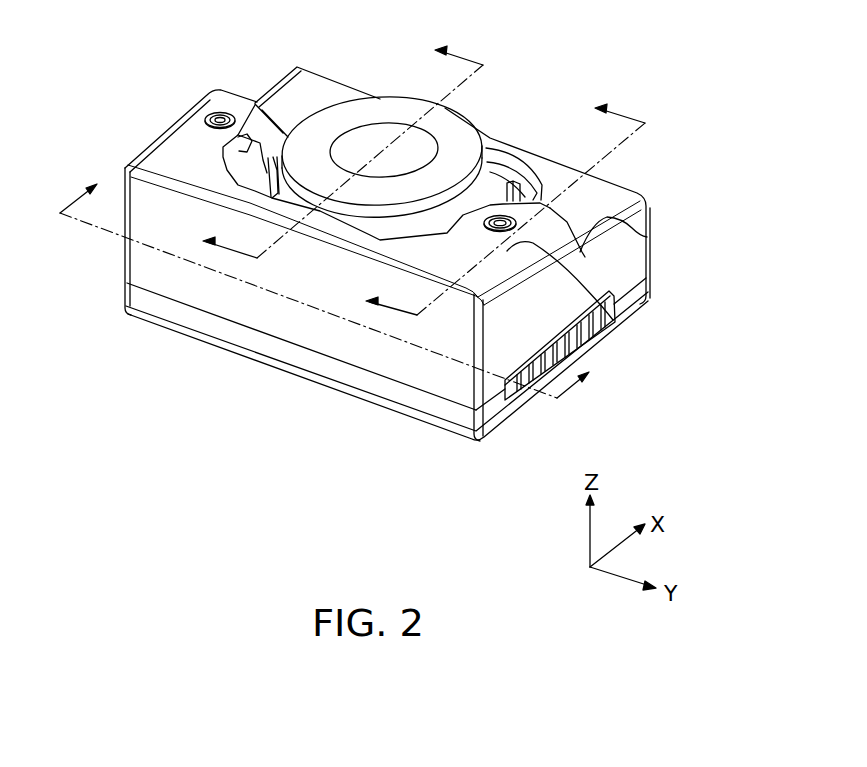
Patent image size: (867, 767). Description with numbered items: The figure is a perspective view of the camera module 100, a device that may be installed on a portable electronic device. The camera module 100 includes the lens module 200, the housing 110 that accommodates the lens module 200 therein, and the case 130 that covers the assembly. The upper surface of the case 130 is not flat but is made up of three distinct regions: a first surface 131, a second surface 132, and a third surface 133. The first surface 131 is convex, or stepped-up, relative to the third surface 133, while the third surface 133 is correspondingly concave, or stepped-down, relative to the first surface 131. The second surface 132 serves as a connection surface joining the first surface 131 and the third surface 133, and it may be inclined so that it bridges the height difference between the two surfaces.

The camera module 100 is at (92, 58).
The housing 110 is at (430, 407).
The case 130 is at (367, 355).
The first surface 131 is at (613, 320).
The second surface 132 is at (647, 237).
The third surface 133 is at (612, 196).
The lens module 200 is at (452, 128).